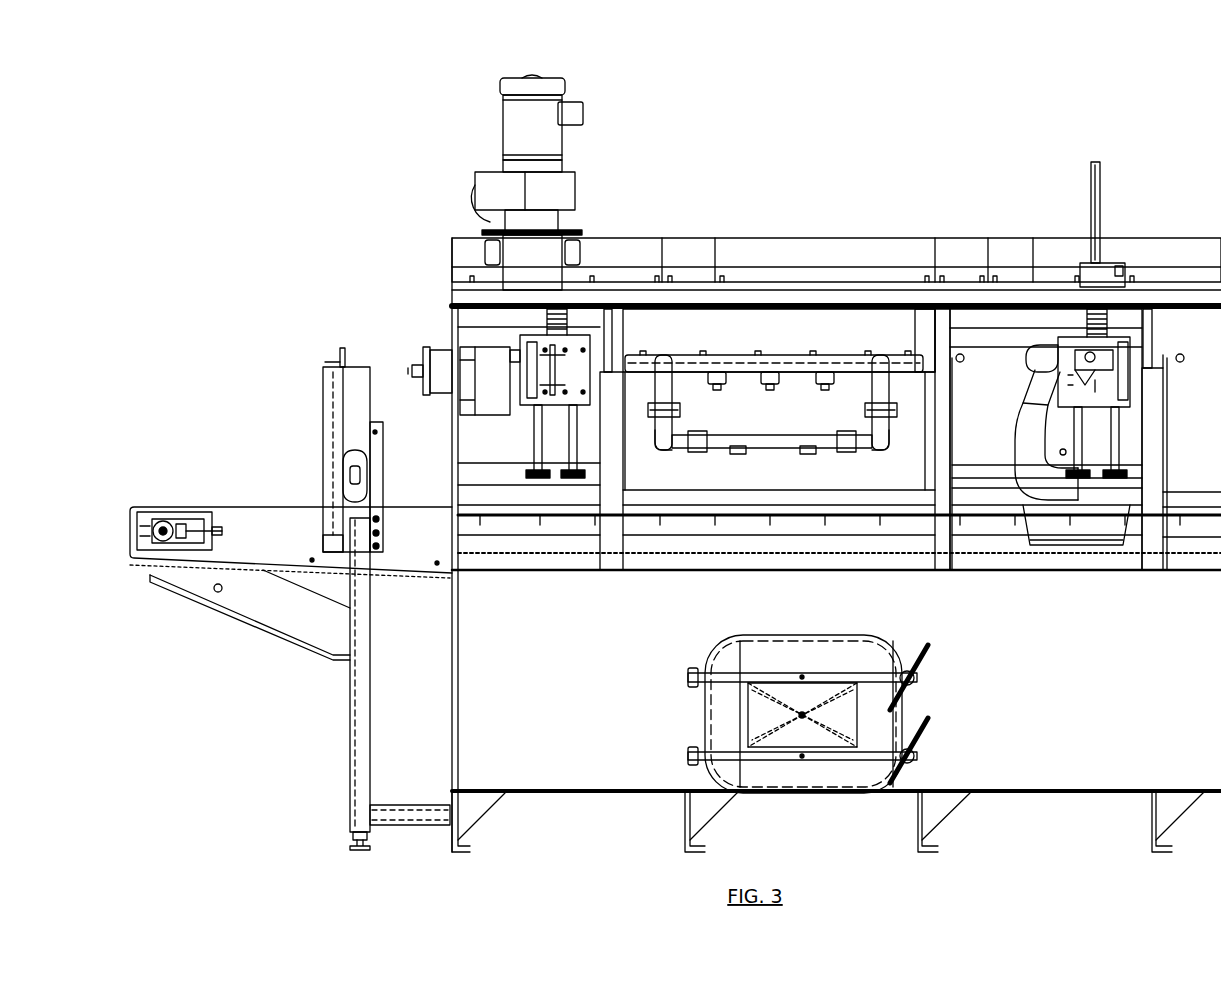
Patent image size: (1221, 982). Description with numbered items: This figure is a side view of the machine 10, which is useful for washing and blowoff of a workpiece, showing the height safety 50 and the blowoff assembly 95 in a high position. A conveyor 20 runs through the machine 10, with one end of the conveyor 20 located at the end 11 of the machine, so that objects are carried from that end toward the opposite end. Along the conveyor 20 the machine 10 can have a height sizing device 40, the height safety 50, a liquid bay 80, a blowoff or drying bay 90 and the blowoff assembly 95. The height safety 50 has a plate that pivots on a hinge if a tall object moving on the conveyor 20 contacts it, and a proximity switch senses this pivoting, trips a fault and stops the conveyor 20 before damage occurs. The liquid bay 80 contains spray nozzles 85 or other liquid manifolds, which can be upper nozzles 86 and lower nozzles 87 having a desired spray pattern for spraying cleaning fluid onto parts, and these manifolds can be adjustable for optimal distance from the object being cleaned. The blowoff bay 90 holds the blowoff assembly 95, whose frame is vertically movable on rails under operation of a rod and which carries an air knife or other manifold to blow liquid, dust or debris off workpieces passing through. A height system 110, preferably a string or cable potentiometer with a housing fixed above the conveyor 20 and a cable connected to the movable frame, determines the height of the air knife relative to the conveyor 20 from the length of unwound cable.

The machine 10 is at (930, 87).
The end of the machine 11 is at (158, 510).
The conveyor 20 is at (252, 505).
The height sizing device 40 is at (355, 367).
The height safety 50 is at (572, 377).
The liquid bay 80 is at (715, 330).
The spray nozzles 85 is at (778, 370).
The upper nozzles 86 is at (826, 372).
The lower nozzles 87 is at (718, 560).
The blowoff bay 90 is at (988, 365).
The blowoff assembly 95 is at (1058, 337).
The height system 110 is at (1117, 263).